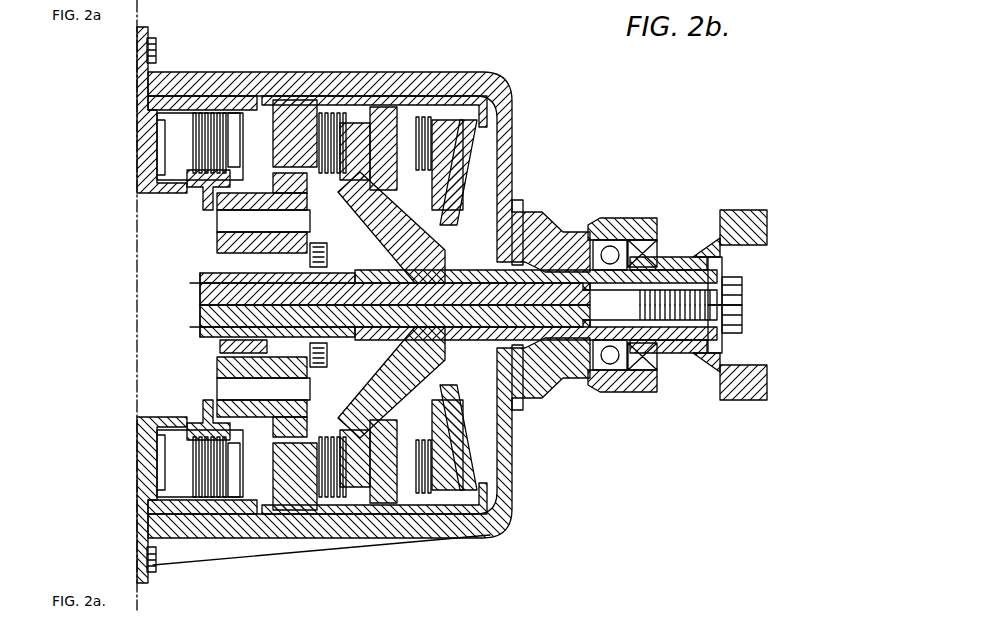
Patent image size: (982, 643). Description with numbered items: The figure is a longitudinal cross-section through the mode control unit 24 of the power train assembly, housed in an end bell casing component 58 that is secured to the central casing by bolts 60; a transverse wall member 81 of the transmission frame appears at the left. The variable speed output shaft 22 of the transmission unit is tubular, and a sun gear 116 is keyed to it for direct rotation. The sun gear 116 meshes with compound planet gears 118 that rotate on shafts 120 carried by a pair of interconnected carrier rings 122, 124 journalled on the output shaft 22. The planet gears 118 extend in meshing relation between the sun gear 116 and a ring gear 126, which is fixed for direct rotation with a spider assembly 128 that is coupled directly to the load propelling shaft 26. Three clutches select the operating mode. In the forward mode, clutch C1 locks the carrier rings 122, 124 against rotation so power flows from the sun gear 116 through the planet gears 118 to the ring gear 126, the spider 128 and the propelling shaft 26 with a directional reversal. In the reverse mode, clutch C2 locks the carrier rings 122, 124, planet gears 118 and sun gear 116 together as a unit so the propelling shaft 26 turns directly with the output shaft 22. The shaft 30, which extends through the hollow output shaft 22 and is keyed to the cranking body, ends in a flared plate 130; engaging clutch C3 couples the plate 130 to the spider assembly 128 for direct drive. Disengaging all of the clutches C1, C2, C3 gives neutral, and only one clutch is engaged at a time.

The variable speed output shaft 22 is at (200, 296).
The mode control unit 24 is at (352, 96).
The load propelling shaft 26 is at (768, 230).
The shaft 30 is at (310, 313).
The end bell casing component 58 is at (247, 82).
The bolts 60 is at (157, 52).
The transverse wall member 81 is at (148, 152).
The sun gear 116 is at (240, 348).
The planet gears 118 is at (252, 193).
The shafts 120 is at (218, 220).
The carrier ring 122 is at (207, 196).
The carrier ring 124 is at (323, 253).
The ring gear 126 is at (293, 160).
The spider assembly 128 is at (455, 170).
The flared plate 130 is at (373, 278).
The clutch C1 is at (215, 135).
The clutch C2 is at (338, 135).
The clutch C3 is at (452, 120).